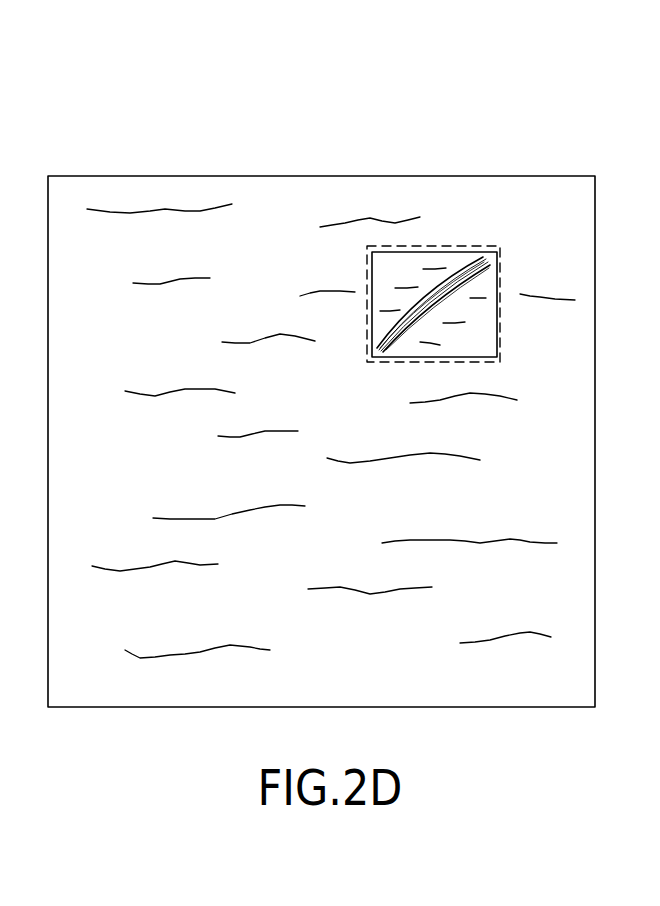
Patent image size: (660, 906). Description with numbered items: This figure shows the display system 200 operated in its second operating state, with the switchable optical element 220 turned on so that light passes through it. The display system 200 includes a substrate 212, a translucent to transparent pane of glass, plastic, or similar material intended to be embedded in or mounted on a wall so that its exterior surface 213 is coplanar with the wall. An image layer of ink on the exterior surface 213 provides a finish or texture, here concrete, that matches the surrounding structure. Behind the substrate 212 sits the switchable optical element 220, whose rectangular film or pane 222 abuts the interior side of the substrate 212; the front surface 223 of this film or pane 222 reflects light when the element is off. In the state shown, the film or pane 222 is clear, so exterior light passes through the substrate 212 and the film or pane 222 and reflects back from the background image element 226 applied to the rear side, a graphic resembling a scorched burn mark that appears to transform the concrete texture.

The display system 200 is at (124, 108).
The substrate 212 is at (362, 177).
The exterior surface 213 is at (478, 193).
The switchable optical element 220 is at (530, 326).
The film or pane 222 is at (473, 359).
The front surface 223 is at (478, 341).
The background image element 226 is at (500, 279).